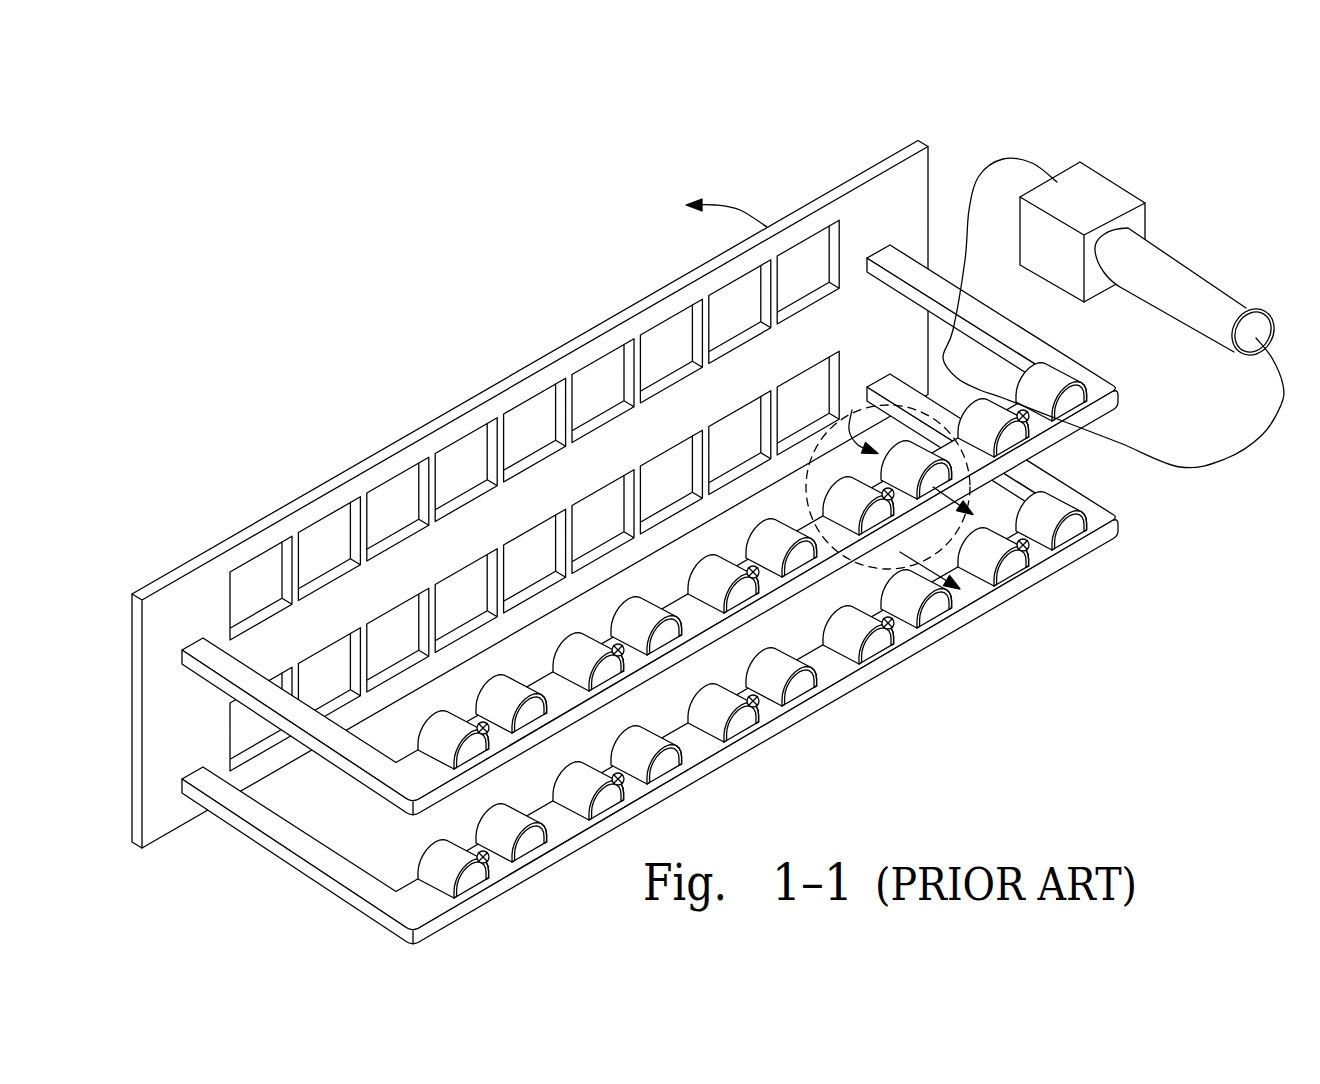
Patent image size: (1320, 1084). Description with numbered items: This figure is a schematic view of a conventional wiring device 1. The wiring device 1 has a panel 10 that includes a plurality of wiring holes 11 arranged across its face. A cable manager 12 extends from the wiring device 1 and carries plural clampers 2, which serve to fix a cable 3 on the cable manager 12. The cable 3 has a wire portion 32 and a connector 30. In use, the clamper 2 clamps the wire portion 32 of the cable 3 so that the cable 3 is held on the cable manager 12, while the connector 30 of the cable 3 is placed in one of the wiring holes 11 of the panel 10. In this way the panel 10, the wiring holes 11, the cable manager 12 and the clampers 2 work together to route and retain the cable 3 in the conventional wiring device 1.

The wiring device 1 is at (630, 498).
The panel 10 is at (530, 494).
The wiring holes 11 is at (792, 285).
The cable manager 12 is at (410, 760).
The clamper 2 is at (1010, 440).
The cable 3 is at (1151, 286).
The connector 30 is at (1087, 187).
The wire portion 32 is at (1202, 312).